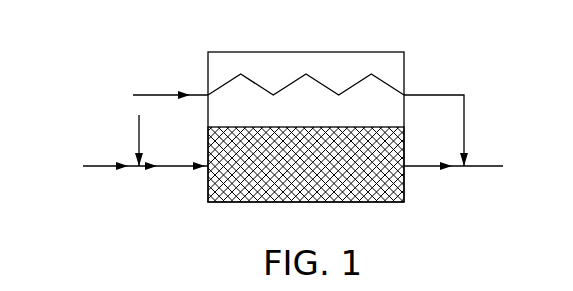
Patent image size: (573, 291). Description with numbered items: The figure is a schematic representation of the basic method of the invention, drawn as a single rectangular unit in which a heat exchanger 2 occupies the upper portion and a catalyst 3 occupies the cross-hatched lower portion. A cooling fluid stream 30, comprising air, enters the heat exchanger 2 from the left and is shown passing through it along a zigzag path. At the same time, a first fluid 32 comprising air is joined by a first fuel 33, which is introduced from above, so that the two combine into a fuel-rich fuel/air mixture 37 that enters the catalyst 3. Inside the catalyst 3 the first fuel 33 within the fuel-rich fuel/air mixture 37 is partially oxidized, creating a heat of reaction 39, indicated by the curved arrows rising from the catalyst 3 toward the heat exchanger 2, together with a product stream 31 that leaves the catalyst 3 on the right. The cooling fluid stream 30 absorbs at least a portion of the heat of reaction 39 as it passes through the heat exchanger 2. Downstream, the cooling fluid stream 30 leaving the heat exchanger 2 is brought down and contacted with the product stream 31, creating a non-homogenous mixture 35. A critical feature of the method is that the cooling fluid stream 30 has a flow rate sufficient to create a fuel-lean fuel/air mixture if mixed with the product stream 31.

The heat exchanger 2 is at (360, 63).
The catalyst 3 is at (278, 203).
The cooling fluid stream 30 is at (153, 92).
The product stream 31 is at (428, 172).
The first fluid 32 is at (106, 165).
The first fuel 33 is at (141, 130).
The non-homogenous mixture 35 is at (488, 170).
The fuel-rich fuel/air mixture 37 is at (176, 170).
The heat of reaction 39 is at (363, 152).